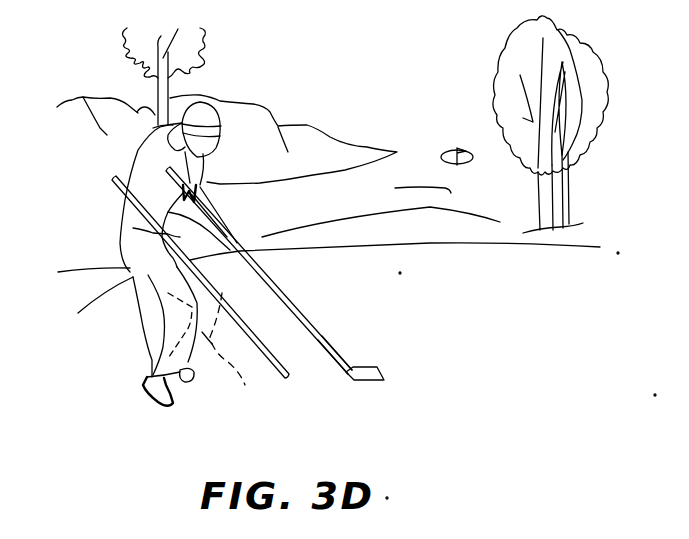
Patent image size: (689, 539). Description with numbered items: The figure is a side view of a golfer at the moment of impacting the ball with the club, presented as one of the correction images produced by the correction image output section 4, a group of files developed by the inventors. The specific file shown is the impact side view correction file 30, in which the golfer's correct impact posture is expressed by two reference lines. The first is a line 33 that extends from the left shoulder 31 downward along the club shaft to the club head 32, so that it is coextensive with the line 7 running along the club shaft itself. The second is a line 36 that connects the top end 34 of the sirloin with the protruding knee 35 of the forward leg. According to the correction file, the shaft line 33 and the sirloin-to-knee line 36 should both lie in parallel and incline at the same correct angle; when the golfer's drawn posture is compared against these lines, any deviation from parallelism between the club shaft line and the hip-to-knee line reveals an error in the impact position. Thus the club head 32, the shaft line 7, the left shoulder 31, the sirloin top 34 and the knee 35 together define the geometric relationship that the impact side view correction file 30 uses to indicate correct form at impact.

The correction image output section 4 is at (122, 365).
The line coextensive with the club shaft 7 is at (345, 358).
The impact side view correction file 30 is at (311, 317).
The left shoulder 31 is at (204, 171).
The club head 32 is at (380, 380).
The line extending from the left shoulder along the club shaft to the club head 33 is at (318, 323).
The top end of the sirloin 34 is at (116, 180).
The protruding knee 35 is at (234, 354).
The line connecting the top end of the sirloin and the protruding knee 36 is at (133, 228).